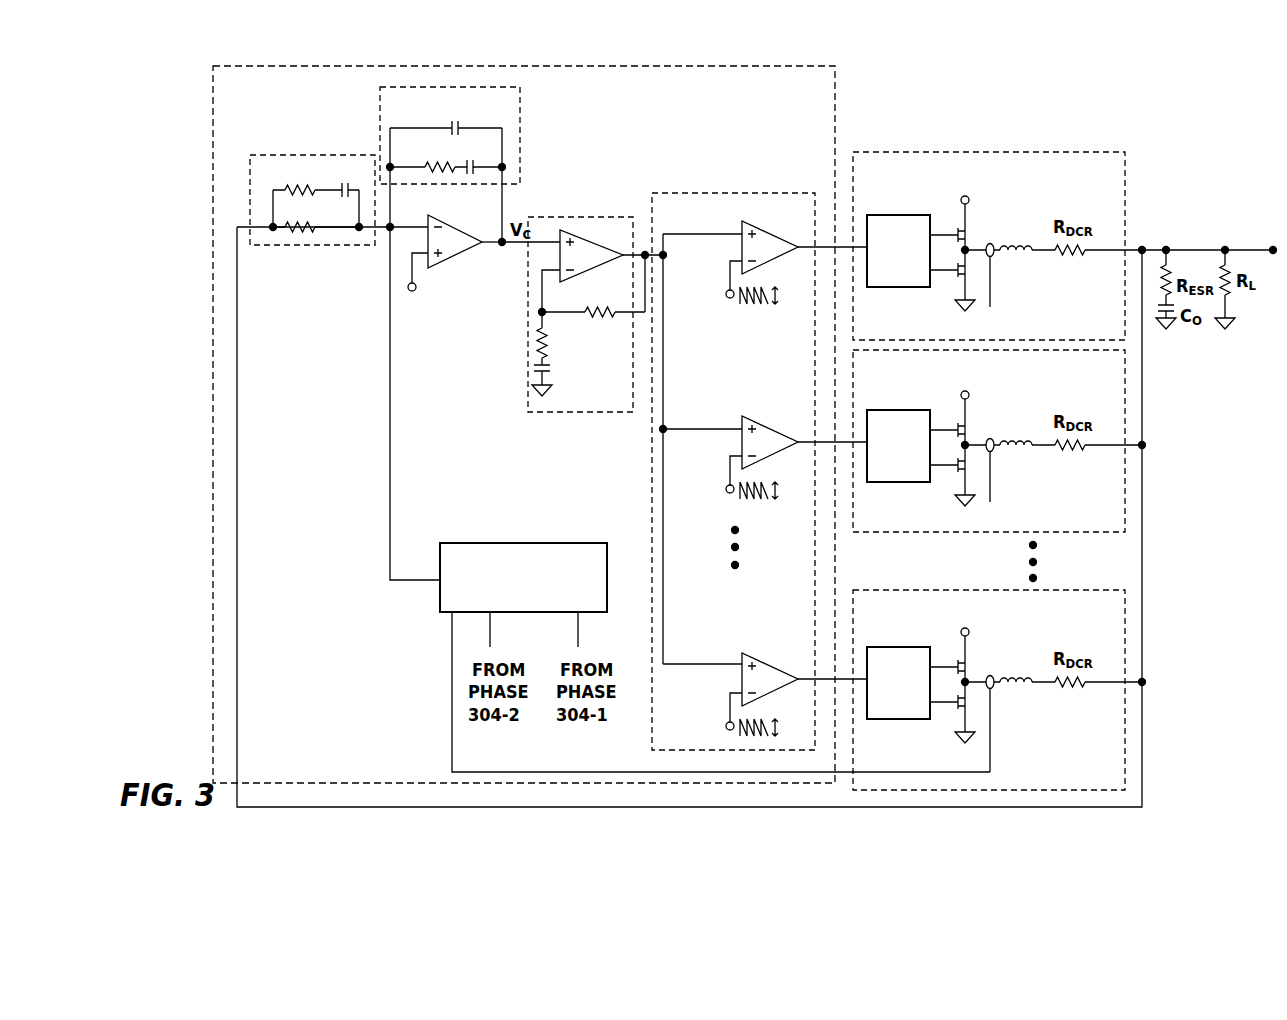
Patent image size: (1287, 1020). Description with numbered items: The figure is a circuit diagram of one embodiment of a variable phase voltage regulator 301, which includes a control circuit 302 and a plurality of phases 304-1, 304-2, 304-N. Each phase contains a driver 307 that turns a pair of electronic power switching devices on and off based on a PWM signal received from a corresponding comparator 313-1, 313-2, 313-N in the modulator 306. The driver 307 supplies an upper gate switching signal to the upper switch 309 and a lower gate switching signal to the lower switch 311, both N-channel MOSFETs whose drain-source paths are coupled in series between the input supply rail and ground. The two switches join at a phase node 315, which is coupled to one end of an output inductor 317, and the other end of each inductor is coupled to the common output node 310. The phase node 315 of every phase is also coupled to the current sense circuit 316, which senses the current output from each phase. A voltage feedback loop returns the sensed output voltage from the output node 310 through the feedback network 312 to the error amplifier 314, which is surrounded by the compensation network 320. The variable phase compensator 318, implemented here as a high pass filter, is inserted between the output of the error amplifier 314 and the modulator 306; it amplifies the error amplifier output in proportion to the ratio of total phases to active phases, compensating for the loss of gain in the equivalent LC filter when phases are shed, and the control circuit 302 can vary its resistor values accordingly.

The variable phase voltage regulator 301 is at (1088, 94).
The control circuit 302 is at (524, 424).
The first phase 304-1 is at (1125, 153).
The second phase 304-2 is at (1125, 395).
The Nth phase 304-N is at (1125, 620).
The modulator 306 is at (702, 193).
The driver 307 is at (902, 467).
The upper switch 309 is at (957, 228).
The output node 310 is at (1273, 248).
The lower switch 311 is at (955, 278).
The feedback network 312 is at (320, 153).
The first comparator 313-1 is at (768, 240).
The second comparator 313-2 is at (768, 432).
The Nth comparator 313-N is at (768, 670).
The error amplifier 314 is at (450, 262).
The phase node 315 is at (969, 248).
The current sense circuit 316 is at (777, 436).
The output inductor 317 is at (1032, 248).
The variable phase compensator 318 is at (590, 412).
The compensation network 320 is at (520, 113).